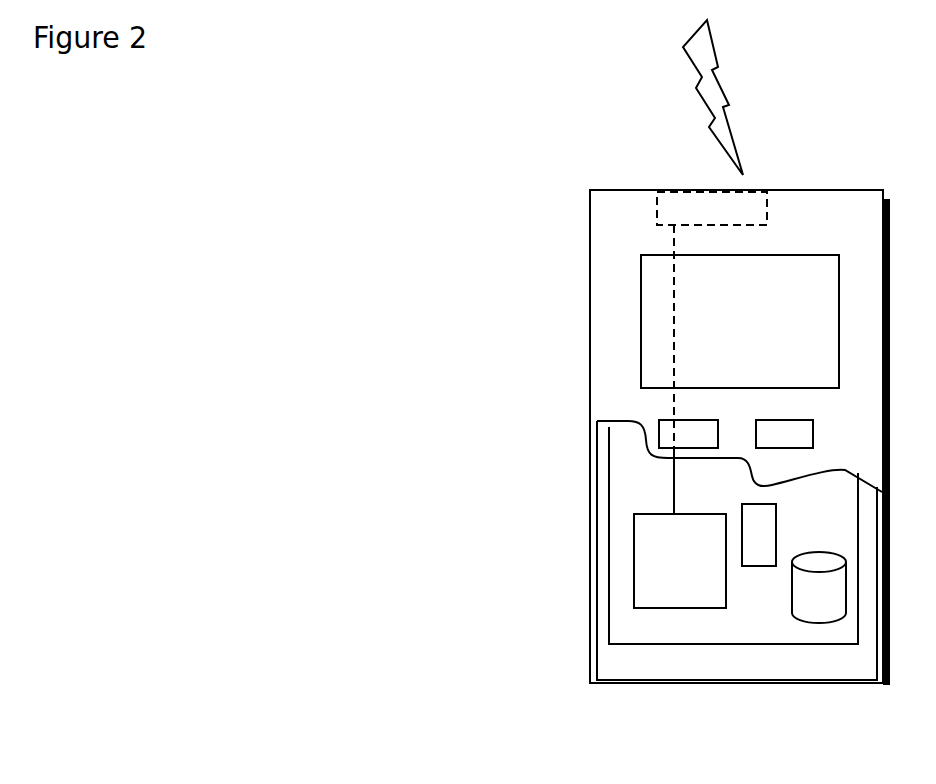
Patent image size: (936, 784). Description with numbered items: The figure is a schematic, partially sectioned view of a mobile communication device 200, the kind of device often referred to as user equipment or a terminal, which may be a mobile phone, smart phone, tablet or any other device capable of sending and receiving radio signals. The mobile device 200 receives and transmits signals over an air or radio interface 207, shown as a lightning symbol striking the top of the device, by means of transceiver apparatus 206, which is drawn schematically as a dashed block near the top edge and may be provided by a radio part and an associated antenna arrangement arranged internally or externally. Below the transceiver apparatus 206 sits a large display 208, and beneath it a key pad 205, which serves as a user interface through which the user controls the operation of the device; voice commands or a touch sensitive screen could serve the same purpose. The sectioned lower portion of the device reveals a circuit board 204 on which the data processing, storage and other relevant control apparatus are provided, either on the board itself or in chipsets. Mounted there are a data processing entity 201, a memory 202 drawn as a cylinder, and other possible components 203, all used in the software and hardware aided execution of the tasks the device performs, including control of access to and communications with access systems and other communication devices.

The communication device 200 is at (593, 231).
The data processing entity 201 is at (642, 546).
The memory 202 is at (812, 601).
The other possible components 203 is at (758, 518).
The circuit board 204 is at (634, 627).
The key pad 205 is at (663, 435).
The transceiver apparatus 206 is at (757, 201).
The air or radio interface 207 is at (740, 125).
The display 208 is at (657, 308).